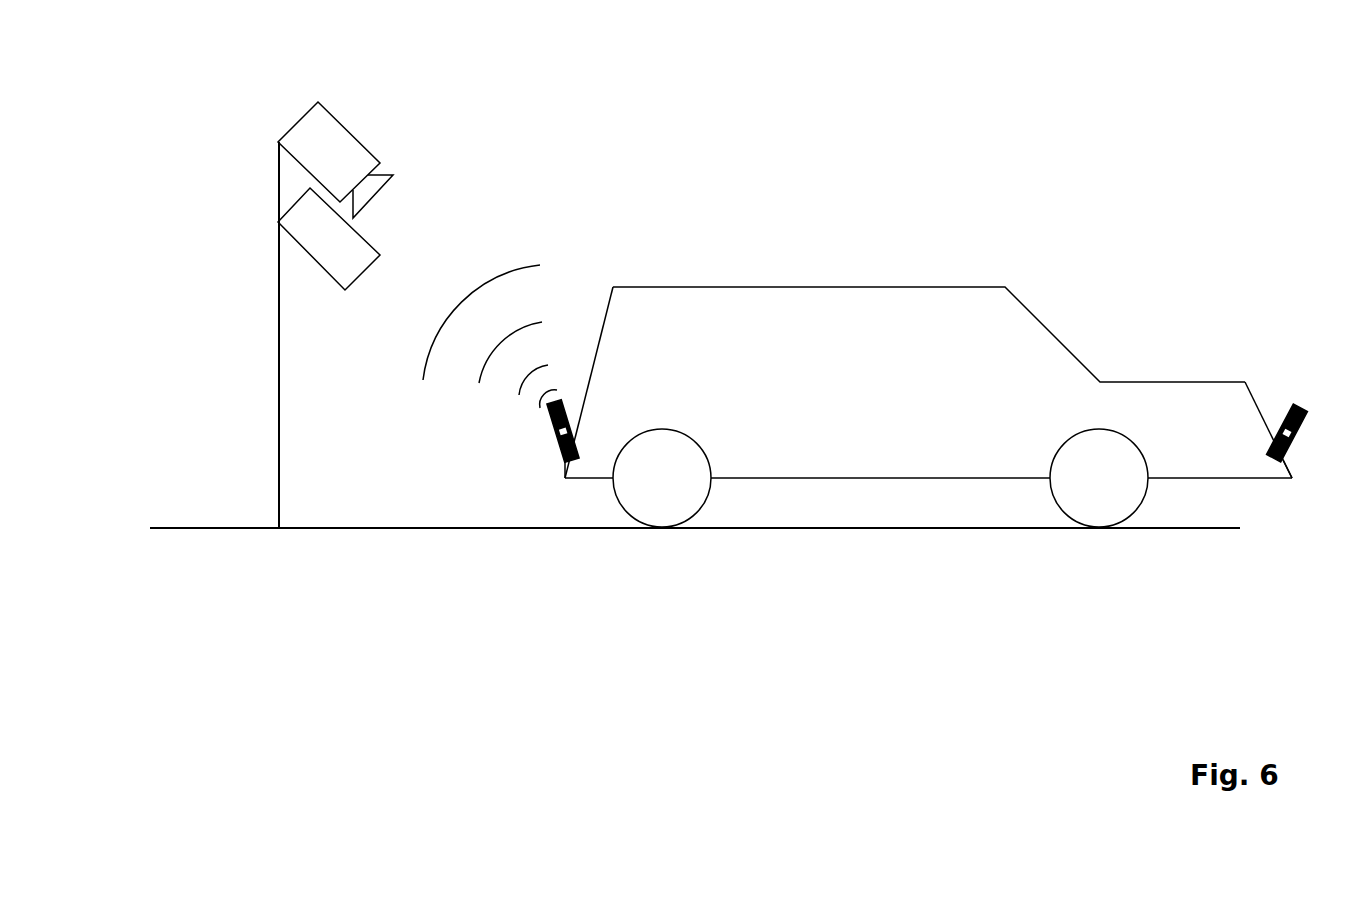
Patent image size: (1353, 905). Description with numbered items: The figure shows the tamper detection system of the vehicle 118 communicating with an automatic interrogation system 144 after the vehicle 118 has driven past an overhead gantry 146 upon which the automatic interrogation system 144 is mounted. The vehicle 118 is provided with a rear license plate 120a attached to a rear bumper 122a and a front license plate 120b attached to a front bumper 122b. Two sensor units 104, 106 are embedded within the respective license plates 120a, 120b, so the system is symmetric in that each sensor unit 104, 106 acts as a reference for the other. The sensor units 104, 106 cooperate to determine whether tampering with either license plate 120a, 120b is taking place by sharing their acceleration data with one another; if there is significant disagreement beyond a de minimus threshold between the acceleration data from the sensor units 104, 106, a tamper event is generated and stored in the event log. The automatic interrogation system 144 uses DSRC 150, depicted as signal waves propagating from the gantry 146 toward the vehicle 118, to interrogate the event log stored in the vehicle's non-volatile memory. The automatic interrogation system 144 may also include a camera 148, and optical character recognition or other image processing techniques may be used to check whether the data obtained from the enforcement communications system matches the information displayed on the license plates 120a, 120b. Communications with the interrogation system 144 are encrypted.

The sensor unit 104 is at (580, 430).
The sensor unit 106 is at (1272, 435).
The vehicle 118 is at (932, 409).
The rear license plate 120a is at (580, 398).
The front license plate 120b is at (1278, 403).
The rear bumper 122a is at (563, 477).
The front bumper 122b is at (1283, 470).
The automatic interrogation system 144 is at (344, 290).
The overhead gantry 146 is at (279, 351).
The camera 148 is at (353, 138).
The DSRC 150 is at (521, 301).